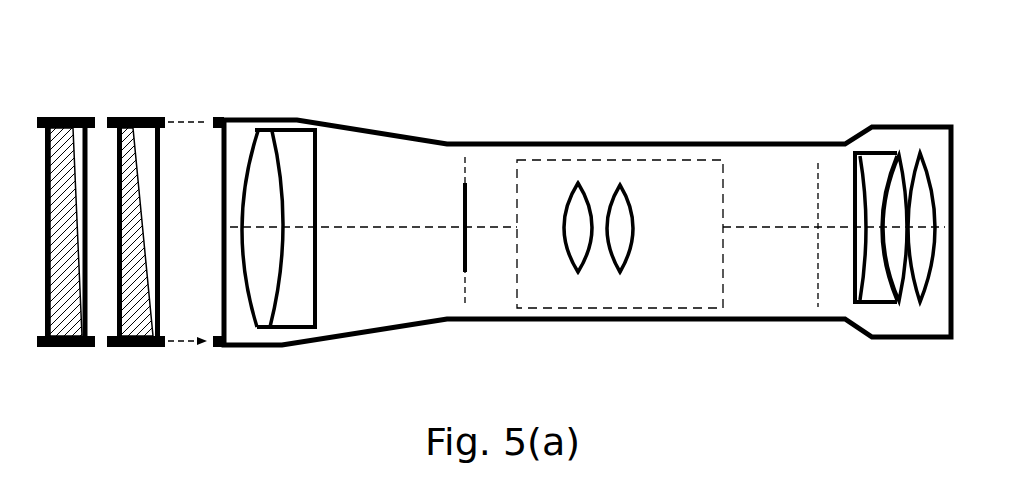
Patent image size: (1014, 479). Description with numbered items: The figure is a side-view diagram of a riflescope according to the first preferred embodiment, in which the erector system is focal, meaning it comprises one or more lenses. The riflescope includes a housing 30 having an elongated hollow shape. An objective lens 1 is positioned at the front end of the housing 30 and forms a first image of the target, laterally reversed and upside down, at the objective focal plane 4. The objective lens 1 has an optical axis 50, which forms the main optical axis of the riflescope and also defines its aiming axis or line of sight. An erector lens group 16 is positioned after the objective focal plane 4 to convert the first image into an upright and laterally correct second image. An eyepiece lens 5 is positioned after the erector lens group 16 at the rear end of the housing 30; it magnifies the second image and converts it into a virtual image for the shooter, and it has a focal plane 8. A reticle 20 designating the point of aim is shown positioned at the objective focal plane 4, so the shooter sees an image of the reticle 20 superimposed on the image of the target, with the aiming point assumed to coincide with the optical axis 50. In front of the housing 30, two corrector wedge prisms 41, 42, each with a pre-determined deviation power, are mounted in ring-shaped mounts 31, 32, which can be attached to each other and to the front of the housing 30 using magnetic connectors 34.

The objective lens 1 is at (270, 329).
The objective focal plane 4 is at (465, 283).
The eyepiece lens 5 is at (875, 300).
The eyepiece focal plane 8 is at (818, 280).
The erector lens group 16 is at (563, 160).
The reticle 20 is at (473, 193).
The housing 30 is at (325, 121).
The ring-shaped mount 31 is at (140, 117).
The ring-shaped mount 32 is at (70, 117).
The magnetic connectors 34 is at (219, 112).
The wedge prism 41 is at (138, 337).
The wedge prism 42 is at (67, 337).
The optical axis 50 is at (413, 226).